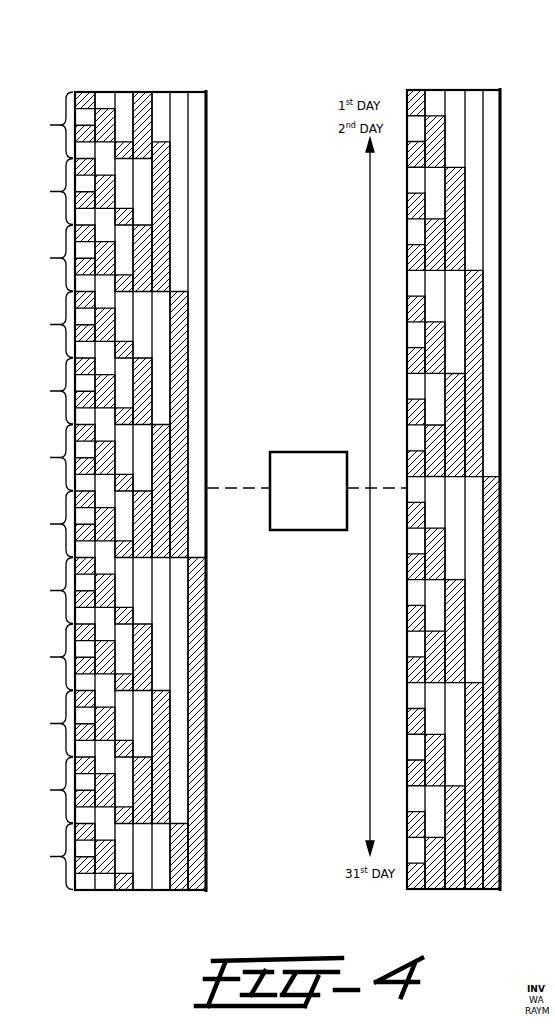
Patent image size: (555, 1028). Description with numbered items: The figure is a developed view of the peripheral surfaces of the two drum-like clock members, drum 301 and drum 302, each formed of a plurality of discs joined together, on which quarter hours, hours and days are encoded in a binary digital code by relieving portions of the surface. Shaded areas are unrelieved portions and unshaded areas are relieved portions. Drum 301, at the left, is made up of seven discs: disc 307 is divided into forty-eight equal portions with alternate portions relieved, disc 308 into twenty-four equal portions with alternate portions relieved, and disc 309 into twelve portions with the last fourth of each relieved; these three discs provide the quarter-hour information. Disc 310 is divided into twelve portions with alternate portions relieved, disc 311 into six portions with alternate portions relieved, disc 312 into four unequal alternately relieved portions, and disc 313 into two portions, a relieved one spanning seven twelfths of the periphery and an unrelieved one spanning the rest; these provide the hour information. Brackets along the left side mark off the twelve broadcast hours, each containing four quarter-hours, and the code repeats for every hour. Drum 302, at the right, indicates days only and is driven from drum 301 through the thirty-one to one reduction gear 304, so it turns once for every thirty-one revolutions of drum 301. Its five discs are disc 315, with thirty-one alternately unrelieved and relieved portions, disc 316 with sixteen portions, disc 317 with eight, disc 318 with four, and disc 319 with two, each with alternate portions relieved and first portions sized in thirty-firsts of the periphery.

The drum 301 is at (199, 371).
The drum 302 is at (497, 247).
The 31:1 reduction gear 304 is at (300, 452).
The disc 307 is at (89, 91).
The disc 308 is at (105, 91).
The disc 309 is at (122, 91).
The disc 310 is at (140, 91).
The disc 311 is at (155, 91).
The disc 312 is at (173, 91).
The disc 313 is at (193, 91).
The disc 315 is at (419, 85).
The disc 316 is at (445, 85).
The disc 317 is at (455, 89).
The disc 318 is at (474, 89).
The disc 319 is at (490, 89).